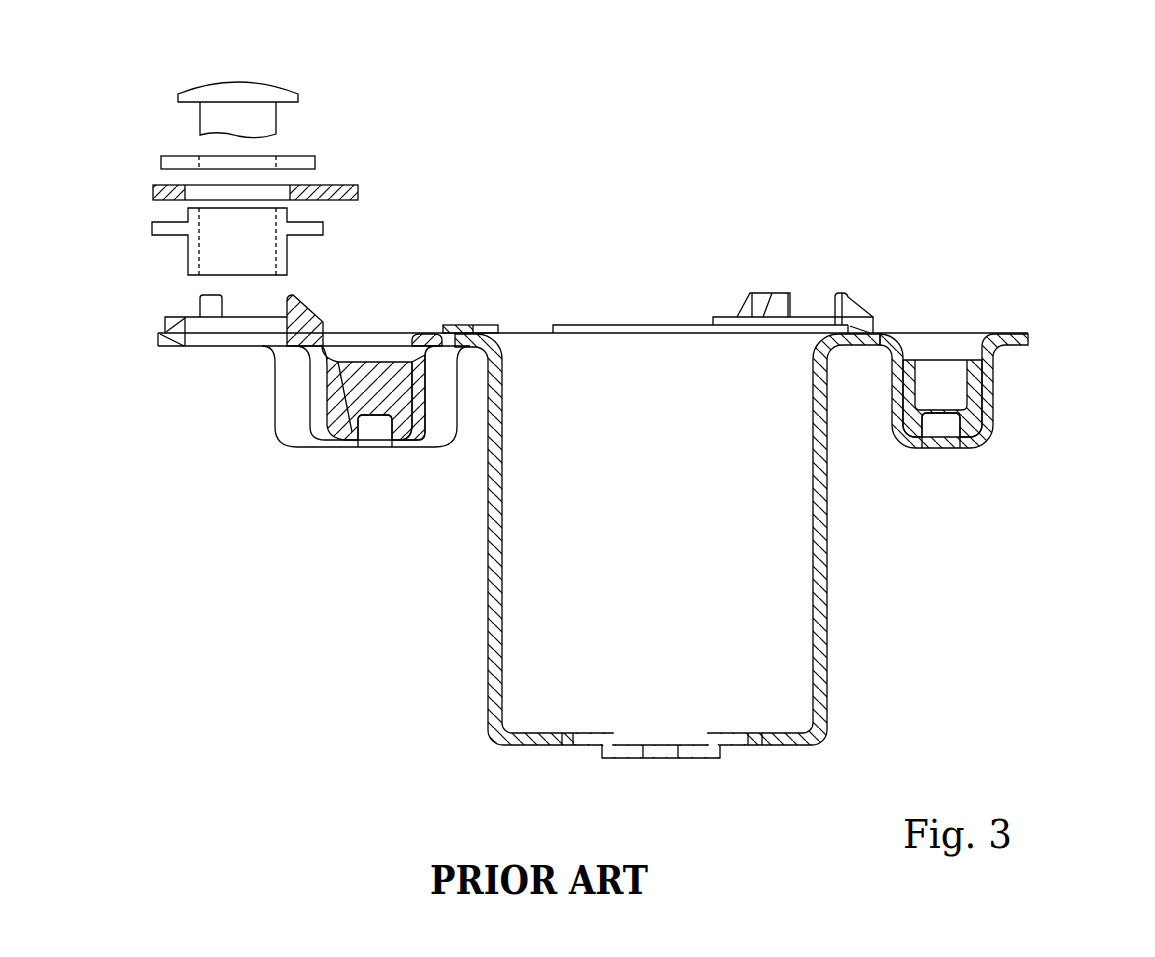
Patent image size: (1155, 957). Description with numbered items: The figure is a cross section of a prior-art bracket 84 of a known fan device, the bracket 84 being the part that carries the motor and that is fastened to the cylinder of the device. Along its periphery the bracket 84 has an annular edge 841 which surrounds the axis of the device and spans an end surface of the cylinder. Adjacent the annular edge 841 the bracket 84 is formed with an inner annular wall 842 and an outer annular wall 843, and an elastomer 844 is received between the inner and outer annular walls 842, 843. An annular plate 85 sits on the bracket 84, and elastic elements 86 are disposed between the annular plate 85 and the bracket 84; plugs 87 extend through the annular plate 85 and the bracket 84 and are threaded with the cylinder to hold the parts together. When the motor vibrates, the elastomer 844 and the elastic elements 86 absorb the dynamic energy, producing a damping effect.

The bracket 84 is at (488, 545).
The annular edge 841 is at (1014, 333).
The inner annular wall 842 is at (893, 378).
The outer annular wall 843 is at (988, 388).
The elastomer 844 is at (903, 447).
The annular plate 85 is at (335, 182).
The elastic elements 86 is at (297, 303).
The plugs 87 is at (240, 80).